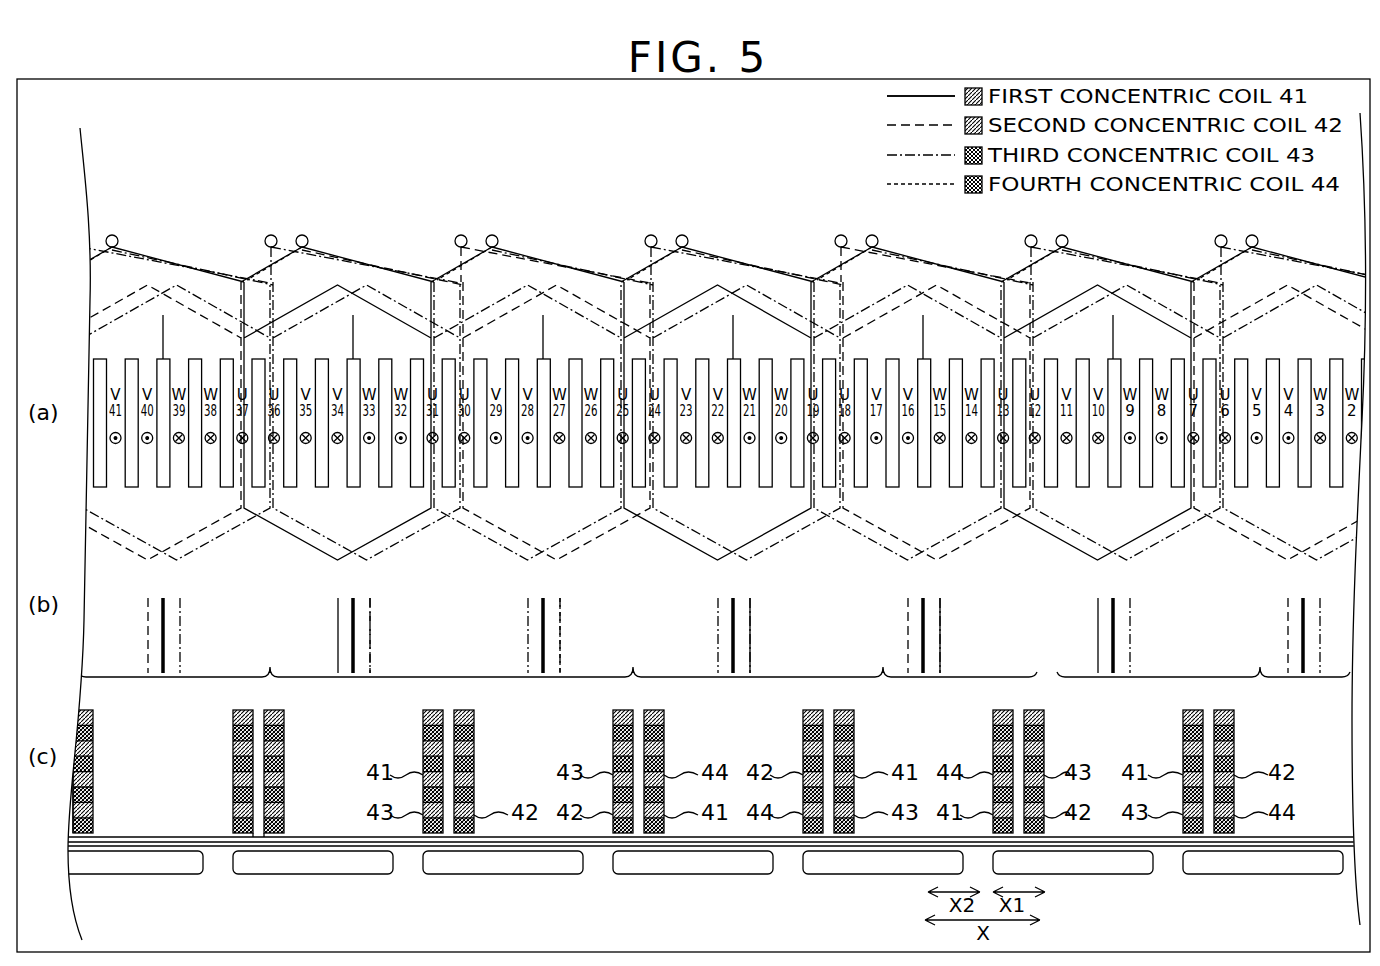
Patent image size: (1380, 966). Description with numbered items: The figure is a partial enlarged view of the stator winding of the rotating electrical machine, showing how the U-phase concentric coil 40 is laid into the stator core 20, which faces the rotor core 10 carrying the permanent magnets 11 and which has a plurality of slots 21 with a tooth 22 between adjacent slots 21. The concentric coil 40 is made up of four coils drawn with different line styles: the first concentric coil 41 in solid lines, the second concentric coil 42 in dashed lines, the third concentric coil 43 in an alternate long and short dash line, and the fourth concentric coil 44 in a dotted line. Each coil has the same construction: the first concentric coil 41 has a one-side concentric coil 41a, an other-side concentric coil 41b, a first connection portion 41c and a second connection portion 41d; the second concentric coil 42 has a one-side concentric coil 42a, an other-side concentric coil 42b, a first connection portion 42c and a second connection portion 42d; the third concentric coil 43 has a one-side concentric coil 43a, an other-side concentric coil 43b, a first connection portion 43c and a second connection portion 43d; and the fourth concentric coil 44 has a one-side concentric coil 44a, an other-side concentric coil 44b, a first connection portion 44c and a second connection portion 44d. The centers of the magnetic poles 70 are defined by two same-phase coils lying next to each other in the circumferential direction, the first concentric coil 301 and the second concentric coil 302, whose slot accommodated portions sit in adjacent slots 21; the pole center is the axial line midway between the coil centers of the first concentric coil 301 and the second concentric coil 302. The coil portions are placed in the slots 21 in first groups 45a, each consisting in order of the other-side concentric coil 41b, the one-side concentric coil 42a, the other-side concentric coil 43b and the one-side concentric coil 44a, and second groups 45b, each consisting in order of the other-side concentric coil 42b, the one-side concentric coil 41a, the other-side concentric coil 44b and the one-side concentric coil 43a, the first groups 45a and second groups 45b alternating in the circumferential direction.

The rotor core 10 is at (409, 881).
The permanent magnet 11 is at (521, 871).
The stator core 20 is at (142, 835).
The slot 21 is at (95, 777).
The tooth 22 is at (257, 838).
The concentric coil 40 is at (816, 168).
The first concentric coil 41 is at (233, 815).
The second concentric coil 42 is at (474, 775).
The third concentric coil 43 is at (284, 775).
The fourth concentric coil 44 is at (233, 775).
The one-side concentric coil 41a is at (750, 657).
The other-side concentric coil 41b is at (338, 645).
The first connection portion 41c is at (940, 627).
The second connection portion 41d is at (528, 627).
The one-side concentric coil 42a is at (370, 647).
The other-side concentric coil 42b is at (718, 652).
The first connection portion 42c is at (560, 627).
The second connection portion 42d is at (908, 627).
The one-side concentric coil 43a is at (940, 657).
The other-side concentric coil 43b is at (528, 657).
The first connection portion 43c is at (370, 617).
The second connection portion 43d is at (718, 624).
The one-side concentric coil 44a is at (560, 657).
The other-side concentric coil 44b is at (908, 652).
The first connection portion 44c is at (750, 627).
The second connection portion 44d is at (338, 617).
The first group 45a is at (913, 693).
The second group 45b is at (557, 692).
The magnetic pole 70 is at (163, 341).
The first concentric coil 301 is at (1098, 634).
The second concentric coil 302 is at (1132, 634).